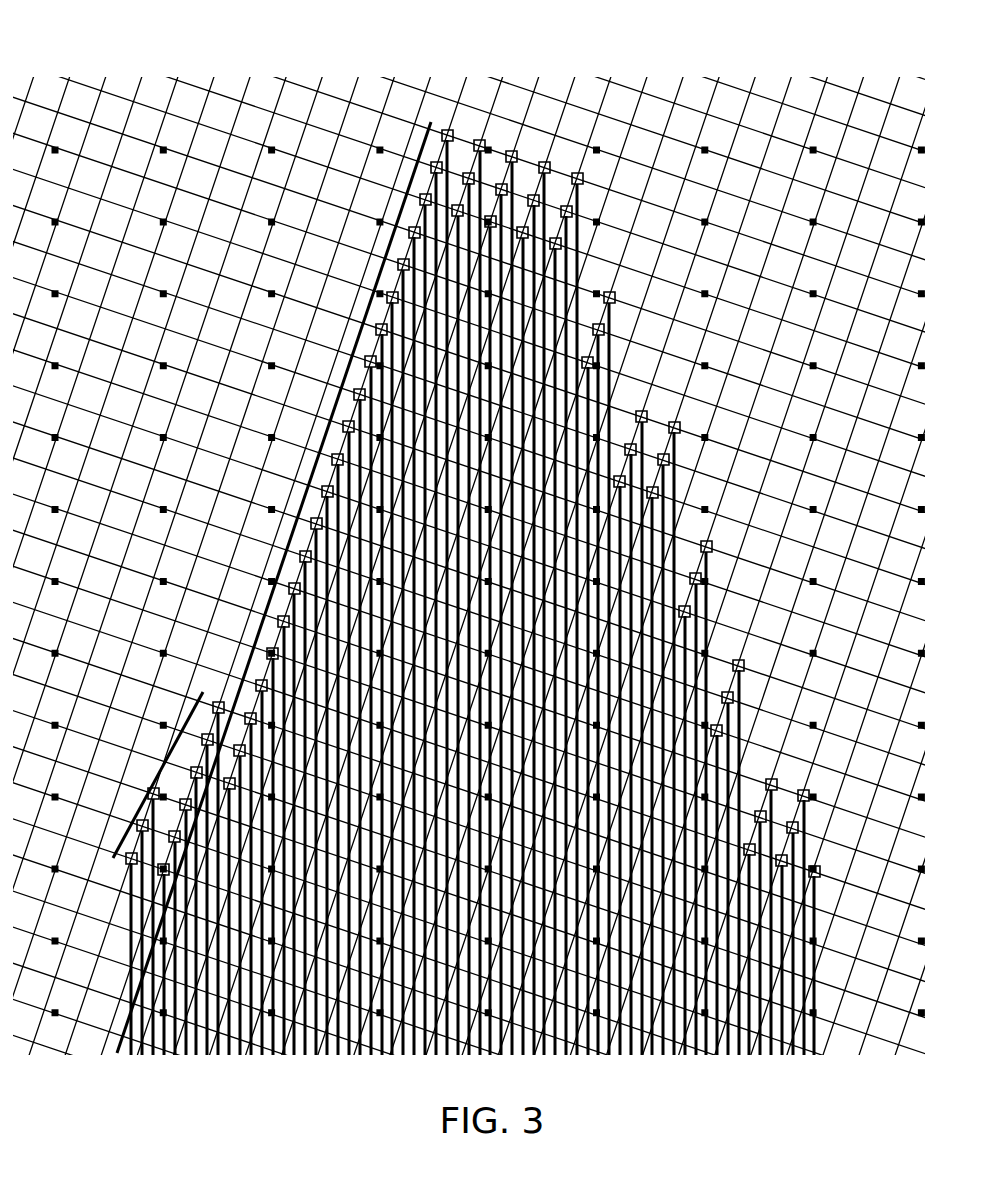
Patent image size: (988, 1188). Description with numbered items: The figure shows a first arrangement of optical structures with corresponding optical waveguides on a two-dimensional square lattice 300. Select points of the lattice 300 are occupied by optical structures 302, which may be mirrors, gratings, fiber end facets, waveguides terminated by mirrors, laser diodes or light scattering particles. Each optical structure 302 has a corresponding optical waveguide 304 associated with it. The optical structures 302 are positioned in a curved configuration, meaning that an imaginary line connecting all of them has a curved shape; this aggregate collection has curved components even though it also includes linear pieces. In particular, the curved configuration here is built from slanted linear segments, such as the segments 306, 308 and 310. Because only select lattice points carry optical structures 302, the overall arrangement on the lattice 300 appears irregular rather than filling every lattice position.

The two-dimensional square lattice 300 is at (103, 40).
The optical structure 302 is at (745, 673).
The optical waveguide 304 is at (742, 726).
The slanted linear segment 306 is at (125, 810).
The slanted linear segment 308 is at (192, 718).
The slanted linear segment 310 is at (298, 492).